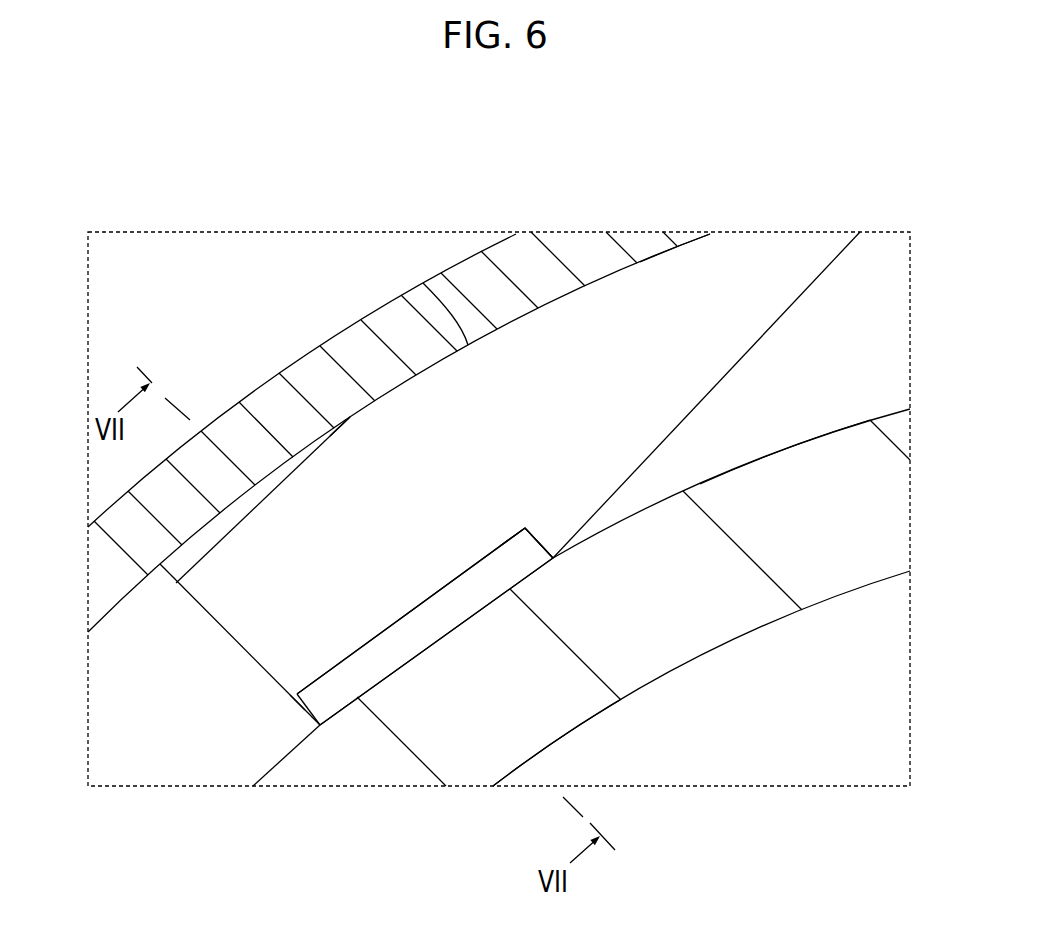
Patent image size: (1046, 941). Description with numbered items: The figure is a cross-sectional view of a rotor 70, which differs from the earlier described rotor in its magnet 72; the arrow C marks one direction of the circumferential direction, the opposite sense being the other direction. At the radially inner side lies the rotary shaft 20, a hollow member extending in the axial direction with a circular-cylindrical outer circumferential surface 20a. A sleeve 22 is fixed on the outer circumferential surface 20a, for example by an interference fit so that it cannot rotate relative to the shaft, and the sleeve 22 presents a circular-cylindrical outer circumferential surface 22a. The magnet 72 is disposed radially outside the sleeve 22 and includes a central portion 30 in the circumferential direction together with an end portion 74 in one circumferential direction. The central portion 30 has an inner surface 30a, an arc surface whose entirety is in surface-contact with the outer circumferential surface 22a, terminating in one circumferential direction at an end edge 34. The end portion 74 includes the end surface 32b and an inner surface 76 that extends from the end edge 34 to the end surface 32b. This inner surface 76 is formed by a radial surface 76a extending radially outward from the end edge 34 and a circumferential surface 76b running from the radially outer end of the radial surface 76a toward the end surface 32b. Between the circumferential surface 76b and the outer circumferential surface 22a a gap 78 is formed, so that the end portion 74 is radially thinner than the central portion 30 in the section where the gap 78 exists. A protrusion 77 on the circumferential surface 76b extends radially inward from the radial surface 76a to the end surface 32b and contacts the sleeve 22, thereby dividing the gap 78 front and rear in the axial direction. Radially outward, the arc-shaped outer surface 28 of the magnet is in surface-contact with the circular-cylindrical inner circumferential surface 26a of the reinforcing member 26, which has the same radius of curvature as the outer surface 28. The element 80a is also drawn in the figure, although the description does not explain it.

The rotor 70 is at (857, 126).
The arrow indicating one direction of the circumferential direction C is at (470, 103).
The reinforcing member 26 is at (550, 288).
The outer surface 28 is at (423, 283).
The inner circumferential surface 26a is at (663, 268).
The magnet 72 is at (344, 410).
The end portion 74 is at (322, 578).
The end surface 32b is at (221, 624).
The inner surface 76 is at (460, 496).
The radial surface 76a is at (527, 540).
The circumferential surface 76b is at (384, 632).
The bonding surface 80a is at (403, 657).
The protrusion 77 is at (296, 712).
The gap 78 is at (333, 693).
The outer circumferential surface 22a is at (270, 768).
The end edge 34 is at (558, 561).
The central portion 30 is at (824, 338).
The inner surface 30a is at (767, 455).
The sleeve 22 is at (687, 596).
The rotary shaft 20 is at (687, 744).
The outer circumferential surface 20a is at (528, 762).